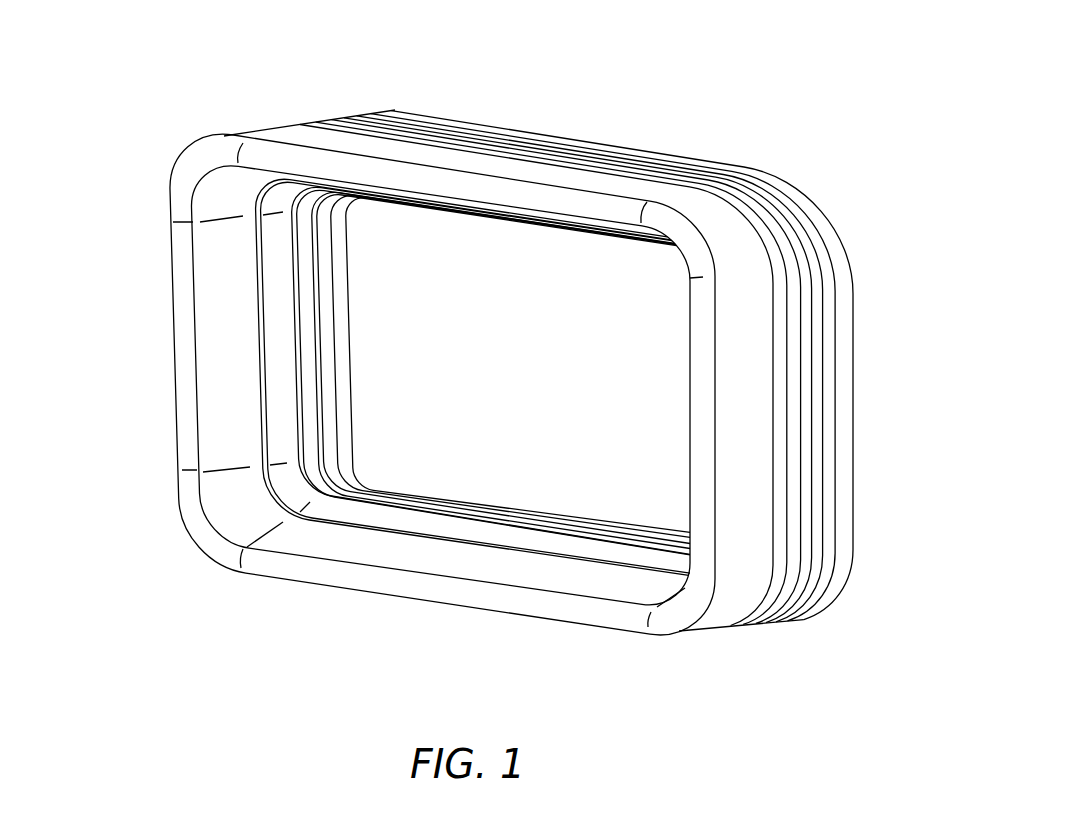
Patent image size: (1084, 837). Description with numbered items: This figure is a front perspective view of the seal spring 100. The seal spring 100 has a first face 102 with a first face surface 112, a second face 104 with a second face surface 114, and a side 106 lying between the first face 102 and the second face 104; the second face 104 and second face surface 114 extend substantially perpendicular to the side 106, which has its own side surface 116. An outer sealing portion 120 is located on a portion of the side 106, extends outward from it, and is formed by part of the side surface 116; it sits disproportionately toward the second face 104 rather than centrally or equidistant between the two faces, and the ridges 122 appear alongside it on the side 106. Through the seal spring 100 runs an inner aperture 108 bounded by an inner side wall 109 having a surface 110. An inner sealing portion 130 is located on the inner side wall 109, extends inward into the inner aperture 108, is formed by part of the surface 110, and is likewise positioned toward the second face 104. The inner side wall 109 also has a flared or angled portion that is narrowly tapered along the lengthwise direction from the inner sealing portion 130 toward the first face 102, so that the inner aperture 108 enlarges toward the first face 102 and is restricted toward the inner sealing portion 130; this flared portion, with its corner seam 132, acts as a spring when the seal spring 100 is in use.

The seal spring 100 is at (680, 128).
The first face 102 is at (183, 387).
The second face 104 is at (473, 127).
The side 106 is at (297, 138).
The inner aperture 108 is at (390, 277).
The inner side wall 109 is at (207, 298).
The surface 110 is at (345, 361).
The first face surface 112 is at (686, 612).
The second face surface 114 is at (828, 213).
The side surface 116 is at (753, 437).
The outer sealing portion 120 is at (807, 373).
The side wall ridge 122 is at (812, 342).
The inner sealing portion 130 is at (383, 510).
The corner seam 132 is at (427, 508).